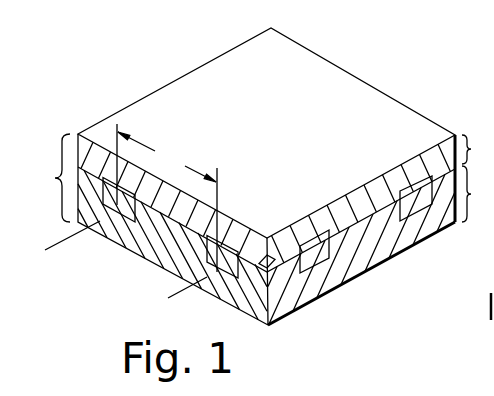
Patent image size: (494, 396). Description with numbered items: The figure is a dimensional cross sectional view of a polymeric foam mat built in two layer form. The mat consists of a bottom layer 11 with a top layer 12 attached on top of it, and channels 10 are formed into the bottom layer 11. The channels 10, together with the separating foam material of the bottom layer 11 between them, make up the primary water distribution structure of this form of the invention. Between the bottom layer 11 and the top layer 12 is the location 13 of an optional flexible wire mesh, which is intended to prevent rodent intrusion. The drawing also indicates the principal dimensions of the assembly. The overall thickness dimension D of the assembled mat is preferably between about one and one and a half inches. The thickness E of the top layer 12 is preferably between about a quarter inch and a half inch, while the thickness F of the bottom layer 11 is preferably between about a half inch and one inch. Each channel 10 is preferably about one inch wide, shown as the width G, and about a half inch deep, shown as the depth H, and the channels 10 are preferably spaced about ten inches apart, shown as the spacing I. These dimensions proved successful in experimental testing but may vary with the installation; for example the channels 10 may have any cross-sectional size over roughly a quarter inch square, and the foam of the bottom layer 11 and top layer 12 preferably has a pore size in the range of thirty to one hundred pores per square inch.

The channels 10 is at (308, 276).
The bottom layer 11 is at (399, 241).
The top layer 12 is at (413, 175).
The location of optional flexible wire mesh 13 is at (160, 212).
The overall thickness dimension D is at (50, 178).
The thickness of the top layer E is at (475, 149).
The thickness of the bottom layer F is at (475, 194).
The channel width G is at (320, 242).
The channel depth H is at (279, 265).
The channel spacing I is at (167, 198).